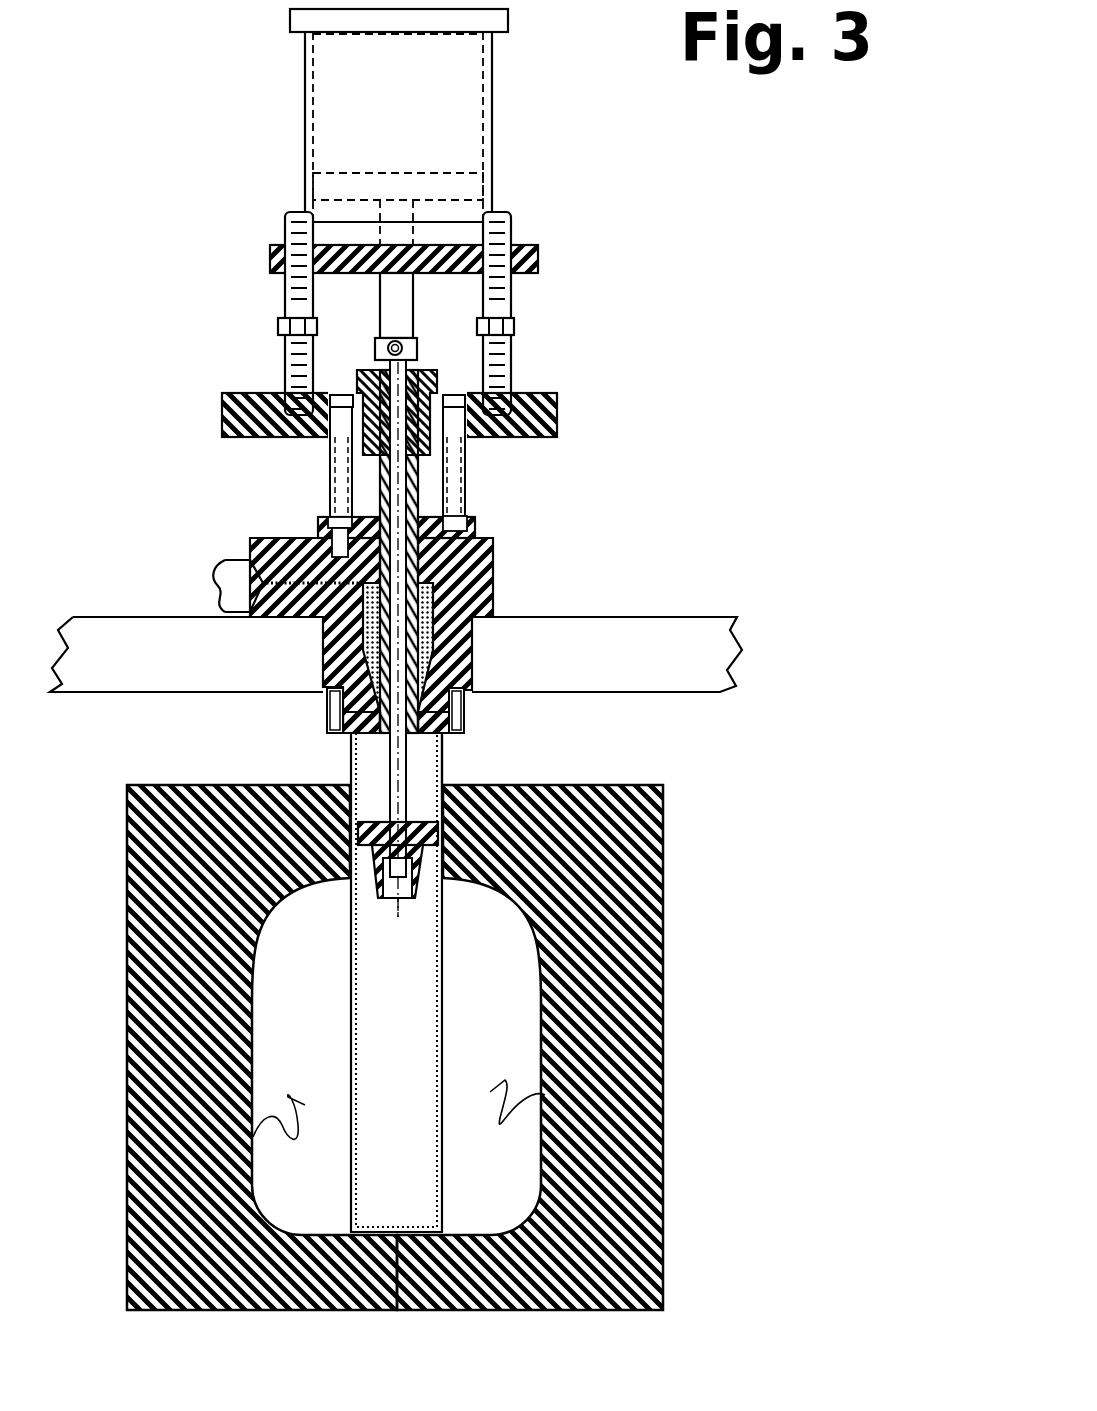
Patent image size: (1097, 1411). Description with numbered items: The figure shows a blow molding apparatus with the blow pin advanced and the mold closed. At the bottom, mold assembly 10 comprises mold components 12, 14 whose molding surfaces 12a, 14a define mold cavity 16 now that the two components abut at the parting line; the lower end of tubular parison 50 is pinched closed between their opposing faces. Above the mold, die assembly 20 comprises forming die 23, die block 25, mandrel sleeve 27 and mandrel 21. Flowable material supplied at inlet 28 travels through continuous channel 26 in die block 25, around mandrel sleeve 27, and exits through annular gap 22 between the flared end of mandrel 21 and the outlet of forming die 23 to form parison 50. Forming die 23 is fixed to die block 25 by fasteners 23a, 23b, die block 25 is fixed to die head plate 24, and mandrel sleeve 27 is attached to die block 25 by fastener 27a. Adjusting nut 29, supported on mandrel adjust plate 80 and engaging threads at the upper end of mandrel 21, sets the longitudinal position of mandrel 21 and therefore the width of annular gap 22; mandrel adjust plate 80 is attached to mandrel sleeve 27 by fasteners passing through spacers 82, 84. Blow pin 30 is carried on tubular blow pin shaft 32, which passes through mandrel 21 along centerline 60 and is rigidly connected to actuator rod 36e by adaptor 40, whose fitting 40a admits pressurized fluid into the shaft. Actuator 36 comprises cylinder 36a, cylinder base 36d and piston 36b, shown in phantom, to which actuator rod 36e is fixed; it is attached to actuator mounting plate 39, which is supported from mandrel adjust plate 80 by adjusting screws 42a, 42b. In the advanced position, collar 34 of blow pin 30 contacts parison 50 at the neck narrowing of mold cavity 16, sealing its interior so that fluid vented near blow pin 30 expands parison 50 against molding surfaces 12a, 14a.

The mold assembly 10 is at (725, 723).
The mold component 12 is at (630, 810).
The molding surface 12a is at (495, 1101).
The mold component 14 is at (145, 795).
The molding surface 14a is at (299, 1117).
The mold cavity 16 is at (276, 1004).
The die assembly 20 is at (283, 500).
The mandrel 21 is at (442, 748).
The annular gap 22 is at (348, 734).
The forming die 23 is at (326, 712).
The fastener 23a is at (336, 728).
The fastener 23b is at (458, 706).
The die head plate 24 is at (573, 668).
The die block 25 is at (495, 560).
The continuous channel 26 is at (270, 540).
The mandrel sleeve 27 is at (470, 522).
The fastener 27a is at (342, 520).
The inlet 28 is at (245, 565).
The adjusting nut 29 is at (425, 375).
The blow pin 30 is at (358, 890).
The blow pin shaft 32 is at (370, 800).
The collar 34 is at (430, 852).
The actuator 36 is at (550, 52).
The cylinder 36a is at (393, 66).
The piston 36b is at (440, 186).
The cylinder base 36d is at (455, 232).
The actuator rod 36e is at (395, 312).
The actuator mounting plate 39 is at (538, 255).
The adaptor 40 is at (382, 350).
The fitting 40a is at (400, 344).
The adjusting screw 42a is at (298, 301).
The adjusting screw 42b is at (500, 299).
The tubular parison 50 is at (443, 1000).
The centerline 60 is at (398, 900).
The mandrel adjust plate 80 is at (538, 395).
The spacer 82 is at (460, 480).
The spacer 84 is at (335, 480).